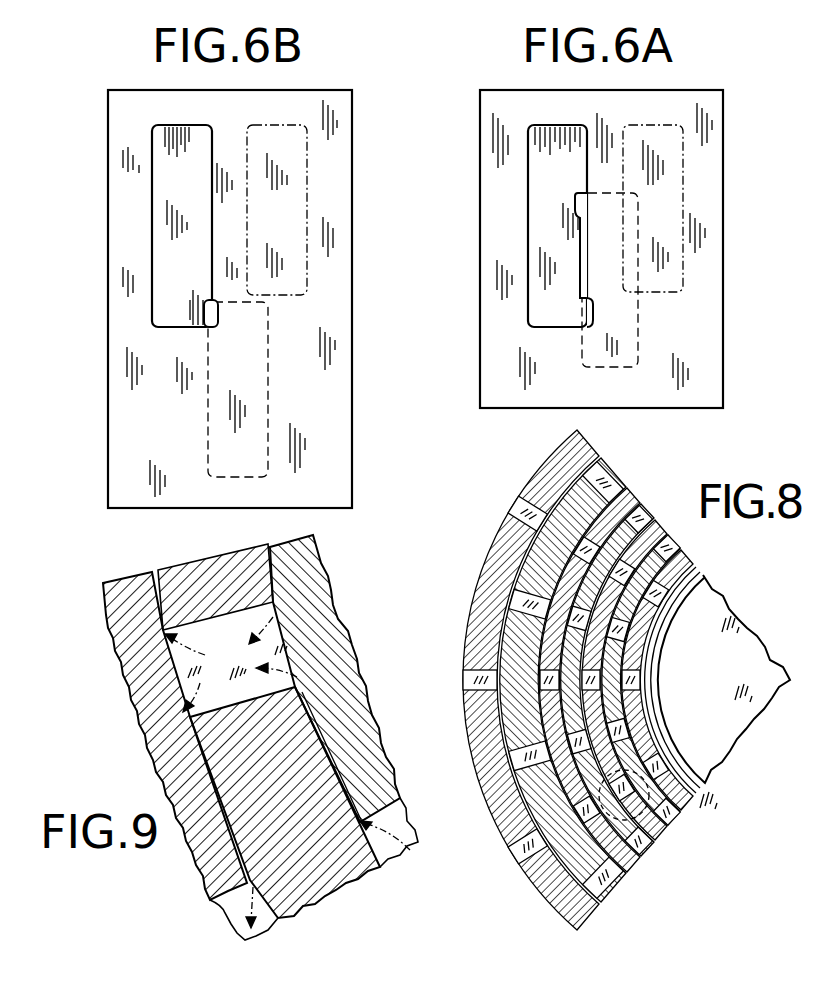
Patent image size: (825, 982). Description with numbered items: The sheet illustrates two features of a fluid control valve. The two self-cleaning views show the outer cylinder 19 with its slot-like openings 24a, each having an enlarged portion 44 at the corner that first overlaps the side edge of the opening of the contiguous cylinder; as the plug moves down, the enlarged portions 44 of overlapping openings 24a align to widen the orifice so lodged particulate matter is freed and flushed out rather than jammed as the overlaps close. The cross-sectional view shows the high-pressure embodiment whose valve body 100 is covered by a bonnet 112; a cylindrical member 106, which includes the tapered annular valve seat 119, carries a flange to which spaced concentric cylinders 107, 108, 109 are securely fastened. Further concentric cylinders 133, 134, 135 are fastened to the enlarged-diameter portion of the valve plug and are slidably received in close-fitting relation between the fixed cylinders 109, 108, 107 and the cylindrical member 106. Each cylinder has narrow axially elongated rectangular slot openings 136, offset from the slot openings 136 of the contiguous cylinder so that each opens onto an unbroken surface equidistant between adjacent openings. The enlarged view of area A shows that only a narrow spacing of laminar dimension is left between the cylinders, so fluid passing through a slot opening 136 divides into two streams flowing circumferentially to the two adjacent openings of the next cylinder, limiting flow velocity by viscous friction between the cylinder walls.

In FIG. 6B, the outer cylinder 19 is at (335, 162).
In FIG. 6A, the outer cylinder 19 is at (715, 162).
In FIG. 6B, the openings 24a is at (152, 243).
In FIG. 6A, the openings 24a is at (528, 230).
In FIG. 6B, the enlarged portion 44 is at (216, 318).
In FIG. 6A, the enlarged portion 44 is at (576, 200).
In FIG. 6B, the bonnet 112 is at (0, 190).
In FIG. 6B, the valve body 100 is at (0, 360).
In FIG. 8, the concentric cylinder 107 is at (655, 527).
In FIG. 9, the concentric cylinder 107 is at (335, 877).
In FIG. 8, the concentric cylinder 134 is at (600, 530).
In FIG. 9, the concentric cylinder 134 is at (213, 902).
In FIG. 8, the concentric cylinder 135 is at (650, 565).
In FIG. 9, the concentric cylinder 135 is at (380, 810).
In FIG. 8, the tapered annular valve seat 119 is at (653, 662).
In FIG. 8, the slot openings 136 is at (470, 681).
In FIG. 9, the slot openings 136 is at (229, 648).
In FIG. 8, the cylindrical member 106 is at (673, 805).
In FIG. 8, the area A is at (641, 817).
In FIG. 8, the concentric cylinder 108 is at (623, 867).
In FIG. 8, the concentric cylinder 133 is at (593, 873).
In FIG. 8, the concentric cylinder 109 is at (543, 890).